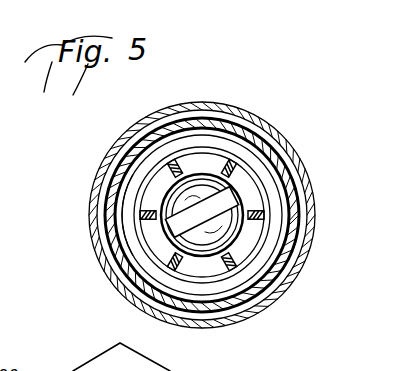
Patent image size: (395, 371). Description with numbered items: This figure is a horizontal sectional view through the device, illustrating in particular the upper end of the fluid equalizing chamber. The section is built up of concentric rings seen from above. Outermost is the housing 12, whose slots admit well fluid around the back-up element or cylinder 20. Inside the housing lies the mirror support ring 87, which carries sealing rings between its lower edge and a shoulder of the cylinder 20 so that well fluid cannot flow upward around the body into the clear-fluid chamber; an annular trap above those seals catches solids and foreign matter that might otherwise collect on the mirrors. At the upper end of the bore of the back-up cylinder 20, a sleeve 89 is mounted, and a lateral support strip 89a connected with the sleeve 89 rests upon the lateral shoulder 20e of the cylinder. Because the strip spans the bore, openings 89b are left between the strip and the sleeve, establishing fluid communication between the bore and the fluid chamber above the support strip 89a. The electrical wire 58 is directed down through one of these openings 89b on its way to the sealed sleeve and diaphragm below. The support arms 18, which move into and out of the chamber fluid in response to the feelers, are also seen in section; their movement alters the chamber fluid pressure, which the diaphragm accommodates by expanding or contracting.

The housing 12 is at (270, 128).
The mirror support ring 87 is at (298, 236).
The back-up element or cylinder 20 is at (286, 193).
The electrical wire 58 is at (204, 134).
The lateral support strip 89a is at (128, 241).
The sleeve 89 is at (207, 290).
The openings 89b is at (142, 190).
The lateral shoulder 20e is at (168, 171).
The support arms 18 is at (258, 214).